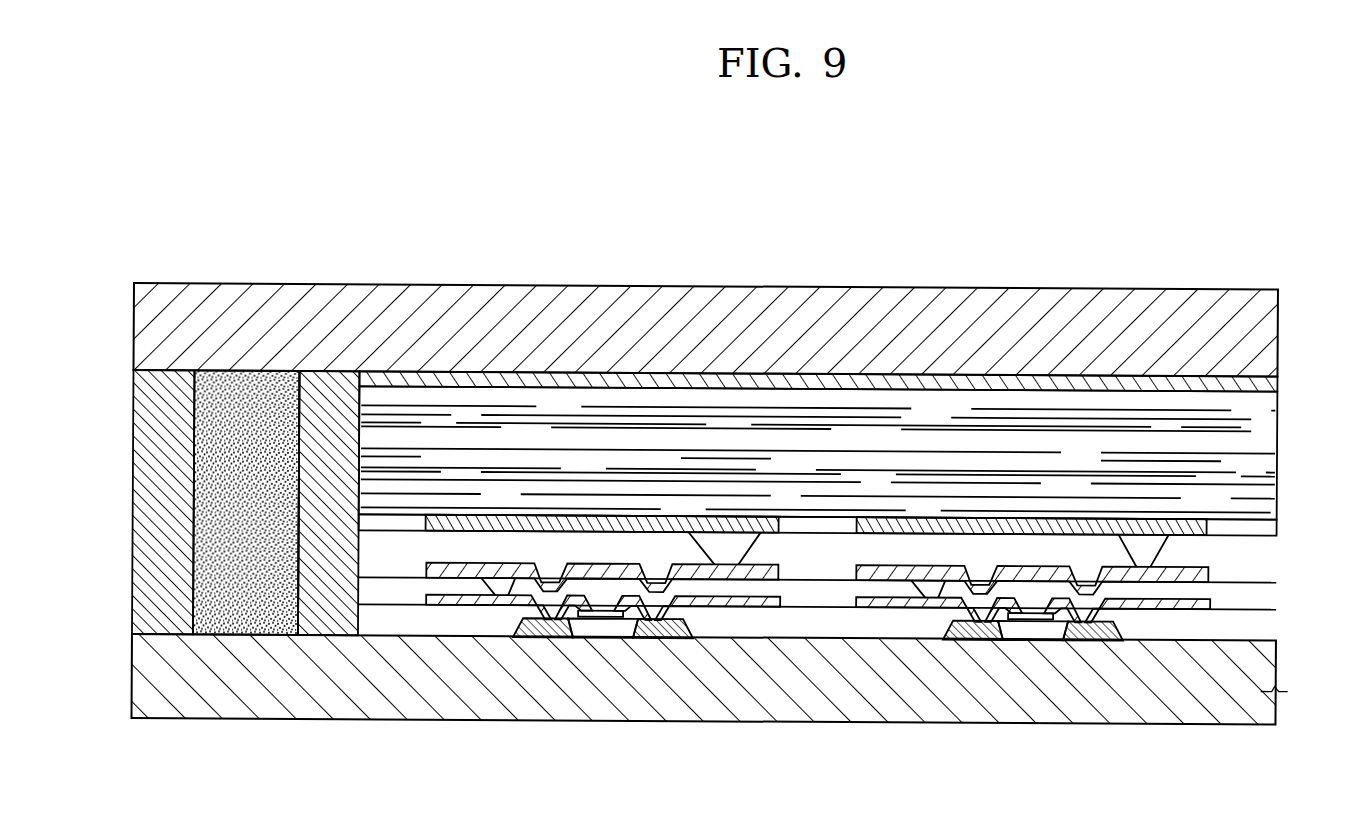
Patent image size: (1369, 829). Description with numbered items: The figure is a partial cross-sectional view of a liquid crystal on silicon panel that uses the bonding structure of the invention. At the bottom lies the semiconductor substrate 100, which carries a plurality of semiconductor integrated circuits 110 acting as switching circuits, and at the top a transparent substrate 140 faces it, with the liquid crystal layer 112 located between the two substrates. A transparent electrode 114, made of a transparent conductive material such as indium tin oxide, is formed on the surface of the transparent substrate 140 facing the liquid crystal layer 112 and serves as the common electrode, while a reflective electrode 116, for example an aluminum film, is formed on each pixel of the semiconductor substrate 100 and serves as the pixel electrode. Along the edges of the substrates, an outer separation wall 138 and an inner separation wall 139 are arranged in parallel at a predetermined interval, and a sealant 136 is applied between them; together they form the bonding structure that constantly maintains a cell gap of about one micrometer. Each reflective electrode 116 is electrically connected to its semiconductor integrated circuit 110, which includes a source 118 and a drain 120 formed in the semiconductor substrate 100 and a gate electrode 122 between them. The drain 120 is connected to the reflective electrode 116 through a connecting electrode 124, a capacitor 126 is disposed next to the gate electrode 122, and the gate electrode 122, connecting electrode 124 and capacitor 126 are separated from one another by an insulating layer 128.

The semiconductor substrate 100 is at (1262, 652).
The semiconductor integrated circuit 110 is at (1137, 606).
The liquid crystal layer 112 is at (1258, 453).
The transparent electrode 114 is at (1262, 376).
The reflective electrode 116 is at (1200, 509).
The source 118 is at (760, 600).
The drain 120 is at (462, 600).
The gate electrode 122 is at (607, 615).
The connecting electrode 124 is at (630, 566).
The capacitor 126 is at (580, 628).
The insulating layer 128 is at (1257, 554).
The sealant 136 is at (222, 417).
The outer separation wall 138 is at (155, 478).
The inner separation wall 139 is at (312, 588).
The transparent substrate 140 is at (1262, 326).